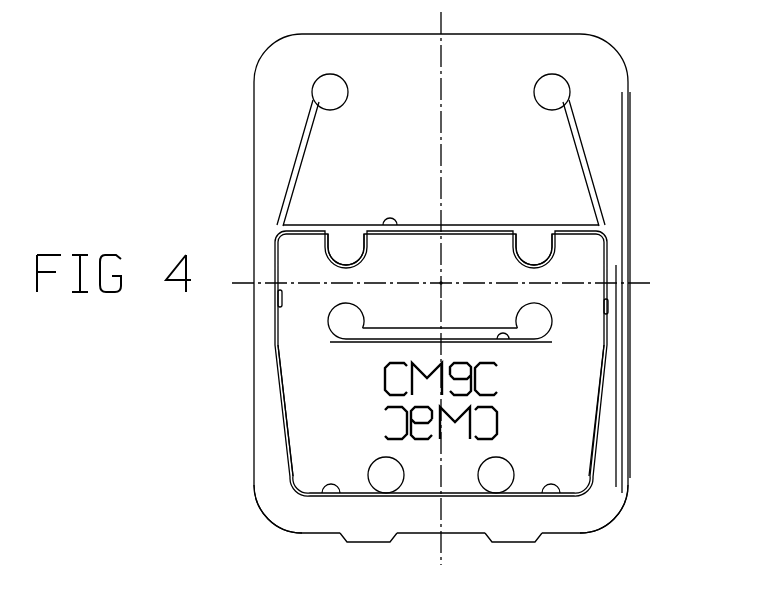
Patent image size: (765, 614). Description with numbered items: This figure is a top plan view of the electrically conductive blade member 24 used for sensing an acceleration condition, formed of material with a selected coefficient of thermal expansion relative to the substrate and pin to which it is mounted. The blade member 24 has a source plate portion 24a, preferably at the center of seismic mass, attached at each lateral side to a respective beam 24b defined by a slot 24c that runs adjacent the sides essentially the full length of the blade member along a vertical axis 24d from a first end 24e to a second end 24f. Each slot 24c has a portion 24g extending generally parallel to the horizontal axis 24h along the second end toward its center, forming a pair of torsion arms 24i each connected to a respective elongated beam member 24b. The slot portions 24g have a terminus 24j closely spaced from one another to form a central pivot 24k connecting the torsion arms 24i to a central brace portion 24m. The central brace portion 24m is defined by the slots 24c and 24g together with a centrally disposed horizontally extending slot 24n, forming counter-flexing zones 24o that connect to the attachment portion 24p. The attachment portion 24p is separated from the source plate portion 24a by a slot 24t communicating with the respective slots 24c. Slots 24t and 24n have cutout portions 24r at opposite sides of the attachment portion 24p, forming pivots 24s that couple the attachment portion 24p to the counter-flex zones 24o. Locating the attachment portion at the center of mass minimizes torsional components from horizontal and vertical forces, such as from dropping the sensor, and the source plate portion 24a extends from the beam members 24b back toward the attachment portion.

The blade member 24 is at (632, 167).
The source plate portion 24a is at (388, 141).
The beam 24b is at (265, 228).
The slot 24c is at (270, 301).
The vertical axis 24d is at (445, 129).
The first end 24e is at (455, 57).
The second end 24f is at (415, 518).
The slot portion 24g is at (323, 482).
The horizontal axis 24h is at (385, 282).
The torsion arm 24i is at (343, 513).
The terminus 24j is at (397, 462).
The central pivot 24k is at (443, 475).
The central brace portion 24m is at (417, 402).
The horizontally extending slot 24n is at (507, 341).
The counter-flexing zone 24o is at (302, 342).
The attachment portion 24p is at (447, 280).
The cutout portion 24r is at (337, 252).
The pivot 24s is at (327, 278).
The slot 24t is at (392, 221).